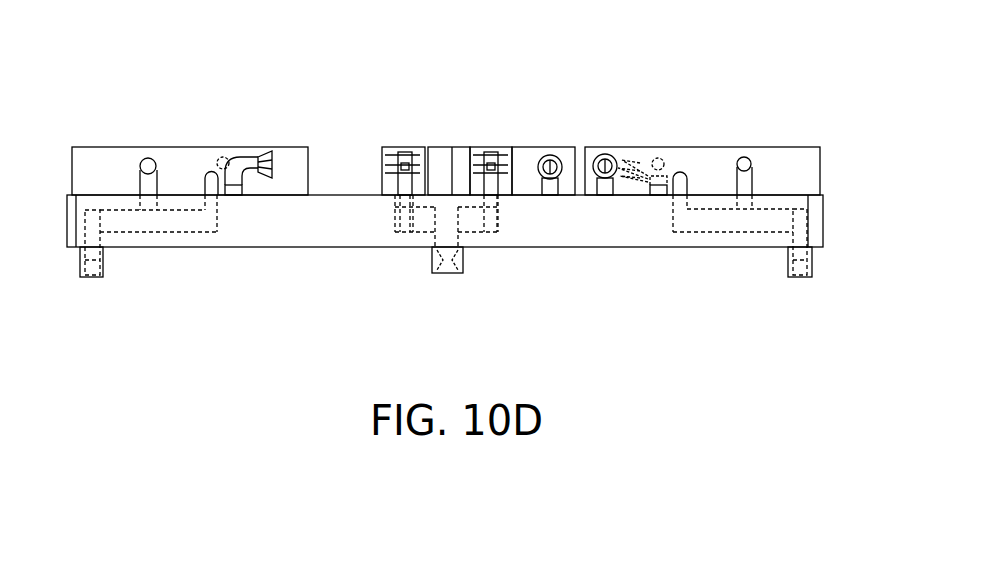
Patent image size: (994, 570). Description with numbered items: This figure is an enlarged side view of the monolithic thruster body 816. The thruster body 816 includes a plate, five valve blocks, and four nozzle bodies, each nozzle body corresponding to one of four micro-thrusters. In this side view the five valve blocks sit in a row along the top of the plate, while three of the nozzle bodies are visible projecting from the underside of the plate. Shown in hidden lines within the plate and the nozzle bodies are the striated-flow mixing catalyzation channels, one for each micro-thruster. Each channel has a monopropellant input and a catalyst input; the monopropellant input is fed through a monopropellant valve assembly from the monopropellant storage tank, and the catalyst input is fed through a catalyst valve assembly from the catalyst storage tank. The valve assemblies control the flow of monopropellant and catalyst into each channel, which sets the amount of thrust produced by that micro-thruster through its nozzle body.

The thruster body 816 is at (785, 46).